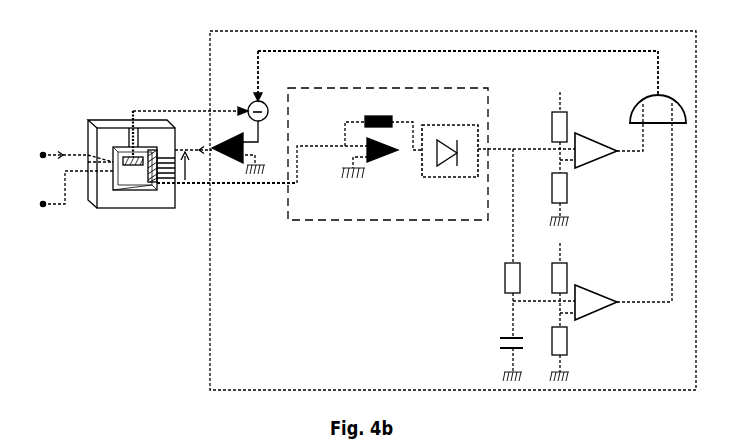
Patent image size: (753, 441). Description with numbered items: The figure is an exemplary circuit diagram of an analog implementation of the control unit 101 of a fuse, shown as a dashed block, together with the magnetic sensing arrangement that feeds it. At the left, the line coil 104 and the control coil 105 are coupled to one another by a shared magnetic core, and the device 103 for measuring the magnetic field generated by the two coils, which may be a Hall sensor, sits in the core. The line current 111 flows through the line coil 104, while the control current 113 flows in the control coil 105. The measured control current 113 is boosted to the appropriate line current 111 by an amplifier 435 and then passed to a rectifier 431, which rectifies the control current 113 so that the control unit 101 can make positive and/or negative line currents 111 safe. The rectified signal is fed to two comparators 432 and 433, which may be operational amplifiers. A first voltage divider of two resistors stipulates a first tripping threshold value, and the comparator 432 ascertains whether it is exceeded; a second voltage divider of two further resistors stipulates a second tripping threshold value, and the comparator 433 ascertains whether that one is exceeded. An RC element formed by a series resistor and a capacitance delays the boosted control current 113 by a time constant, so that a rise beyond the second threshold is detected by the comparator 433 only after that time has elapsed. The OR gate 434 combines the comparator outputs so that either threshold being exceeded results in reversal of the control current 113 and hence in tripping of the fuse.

The control unit 101 is at (210, 315).
The device for measuring the magnetic field 103 is at (131, 135).
The line coil 104 is at (88, 162).
The control coil 105 is at (160, 186).
The line current 111 is at (49, 152).
The control current 113 is at (190, 149).
The rectifier 431 is at (450, 178).
The comparator 432 is at (595, 166).
The comparator 433 is at (605, 310).
The OR gate 434 is at (634, 98).
The amplifier 435 is at (372, 173).